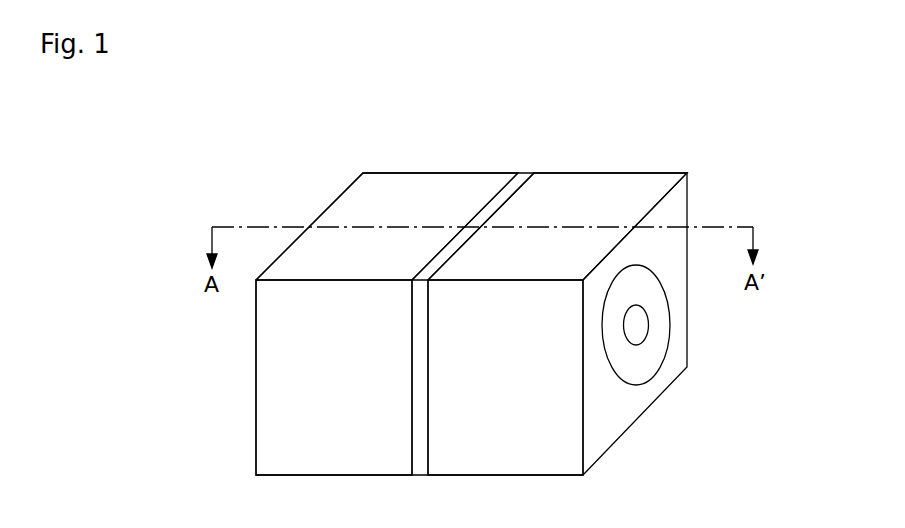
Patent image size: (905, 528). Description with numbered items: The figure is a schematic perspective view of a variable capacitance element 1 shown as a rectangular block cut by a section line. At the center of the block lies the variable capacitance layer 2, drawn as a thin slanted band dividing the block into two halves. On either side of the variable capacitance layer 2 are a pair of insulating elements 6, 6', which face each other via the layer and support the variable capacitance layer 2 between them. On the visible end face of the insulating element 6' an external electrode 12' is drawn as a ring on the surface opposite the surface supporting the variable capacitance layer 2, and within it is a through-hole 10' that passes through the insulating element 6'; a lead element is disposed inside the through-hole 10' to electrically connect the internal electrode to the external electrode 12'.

The variable capacitance element 1 is at (272, 178).
The variable capacitance layer 2 is at (519, 178).
The insulating element 6 is at (387, 301).
The insulating element 6' is at (558, 301).
The external electrode 12' is at (672, 325).
The through-hole 10' is at (678, 353).